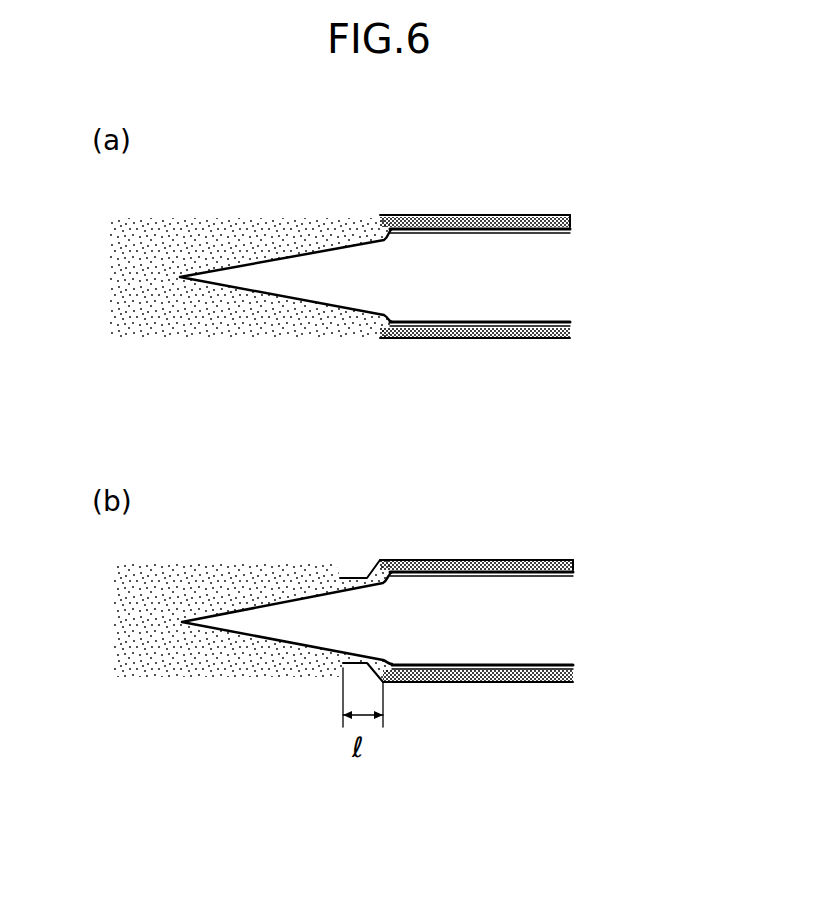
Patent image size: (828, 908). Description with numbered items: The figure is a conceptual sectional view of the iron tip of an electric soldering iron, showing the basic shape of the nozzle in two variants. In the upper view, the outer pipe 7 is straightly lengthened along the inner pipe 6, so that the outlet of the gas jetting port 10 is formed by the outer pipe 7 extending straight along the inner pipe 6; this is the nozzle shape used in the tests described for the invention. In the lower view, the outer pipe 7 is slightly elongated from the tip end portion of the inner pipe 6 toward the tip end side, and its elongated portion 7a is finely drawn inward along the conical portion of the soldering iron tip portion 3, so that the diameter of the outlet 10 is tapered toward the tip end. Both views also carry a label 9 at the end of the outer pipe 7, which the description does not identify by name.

The soldering iron tip portion 3 is at (557, 290).
The inner pipe 6 is at (569, 231).
The outer pipe 7 is at (513, 214).
The elongated portion 7a is at (370, 577).
The fixing portion 9 is at (569, 221).
The outlet of the gas jetting port 10 is at (381, 220).